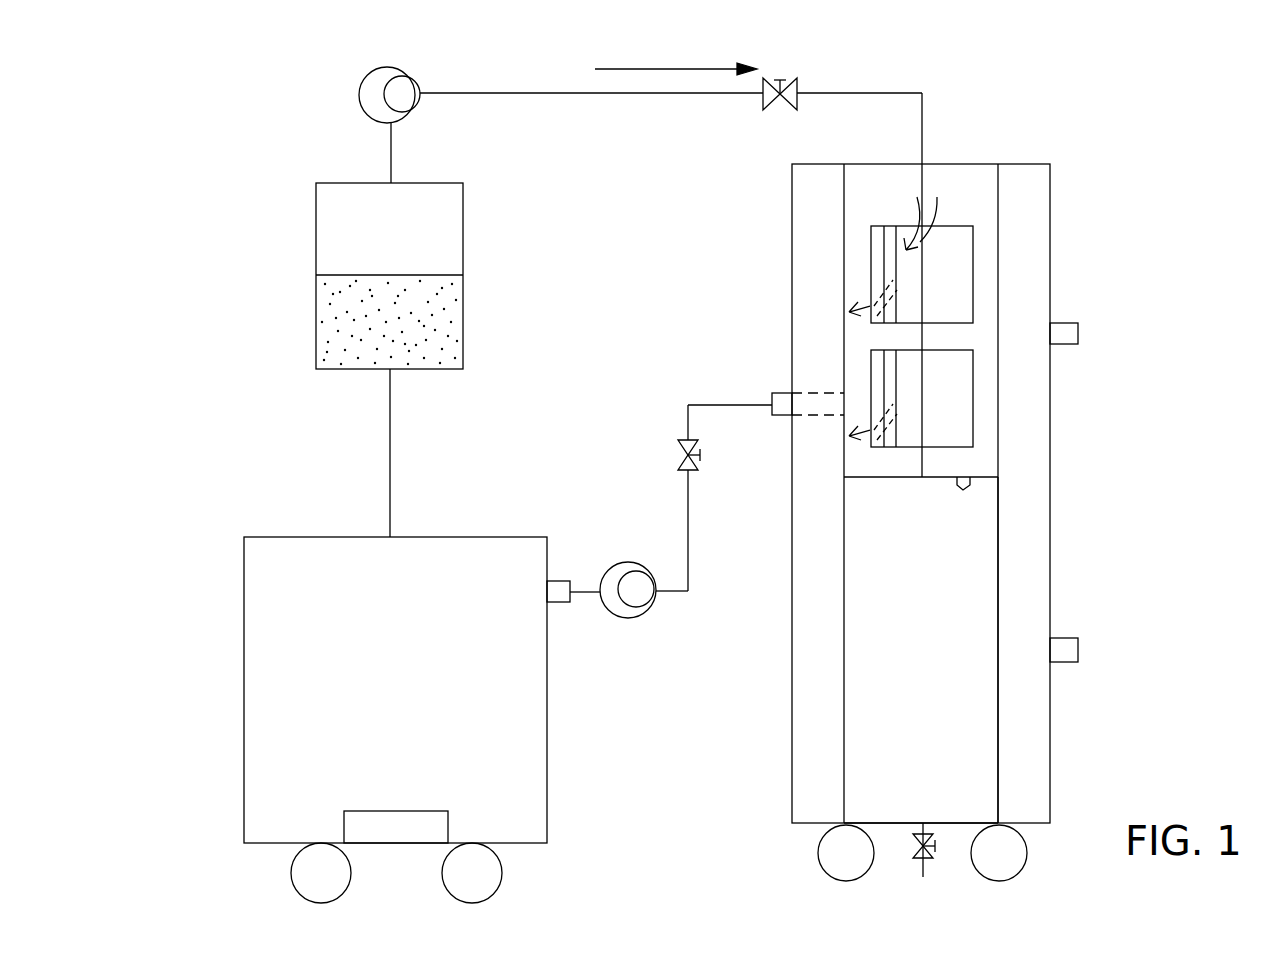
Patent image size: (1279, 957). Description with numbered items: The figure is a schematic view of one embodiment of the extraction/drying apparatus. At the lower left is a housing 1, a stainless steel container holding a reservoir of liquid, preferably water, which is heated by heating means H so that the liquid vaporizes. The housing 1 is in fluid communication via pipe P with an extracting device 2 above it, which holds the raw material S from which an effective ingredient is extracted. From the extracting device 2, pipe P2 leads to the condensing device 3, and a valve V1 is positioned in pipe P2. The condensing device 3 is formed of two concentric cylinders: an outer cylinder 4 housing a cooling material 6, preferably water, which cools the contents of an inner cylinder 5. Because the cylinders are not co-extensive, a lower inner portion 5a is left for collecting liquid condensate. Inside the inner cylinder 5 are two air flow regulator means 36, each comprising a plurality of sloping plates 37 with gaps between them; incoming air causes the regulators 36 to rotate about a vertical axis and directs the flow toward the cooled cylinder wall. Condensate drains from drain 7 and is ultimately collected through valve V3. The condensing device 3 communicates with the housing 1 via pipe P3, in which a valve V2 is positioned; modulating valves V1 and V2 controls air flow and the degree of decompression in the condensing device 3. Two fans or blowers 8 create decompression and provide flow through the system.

The housing 1 is at (244, 745).
The extracting device 2 is at (463, 237).
The condensing device 3 is at (1080, 233).
The outer cylinder 4 is at (1028, 490).
The inner cylinder 5 is at (975, 188).
The lower inner portion 5a is at (963, 600).
The cooling material 6 is at (1026, 235).
The drain 7 is at (957, 483).
The fan or blower 8 is at (405, 73).
The air flow regulator means 36 is at (955, 277).
The sloping plates 37 is at (875, 228).
The raw material S is at (440, 327).
The pipe P is at (391, 460).
The pipe P2 is at (588, 94).
The pipe P3 is at (688, 525).
The heating means H is at (410, 811).
The valve V1 is at (797, 90).
The valve V2 is at (699, 452).
The valve V3 is at (913, 852).